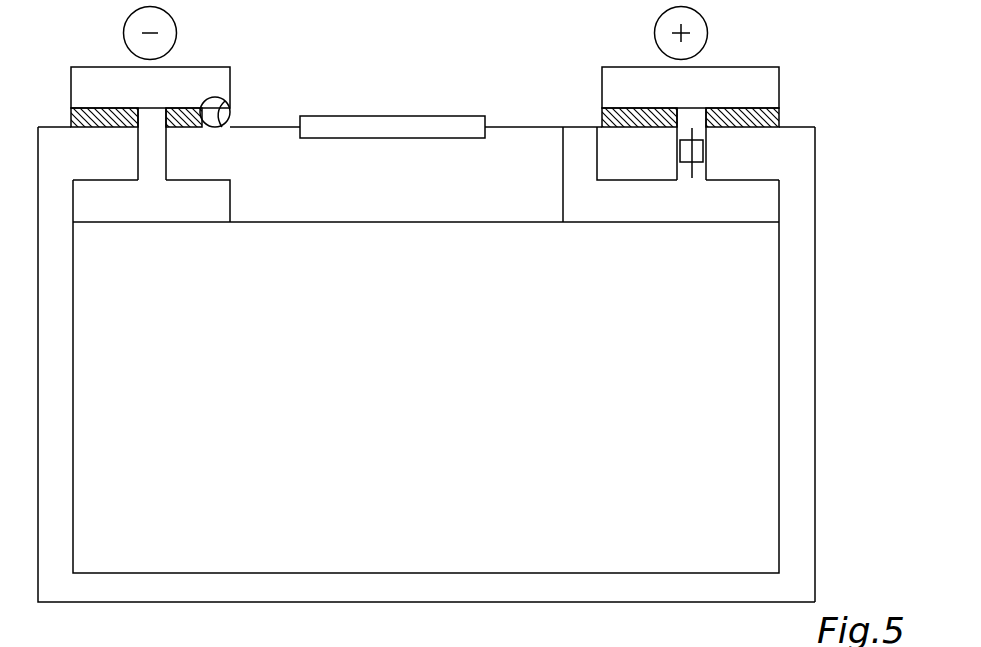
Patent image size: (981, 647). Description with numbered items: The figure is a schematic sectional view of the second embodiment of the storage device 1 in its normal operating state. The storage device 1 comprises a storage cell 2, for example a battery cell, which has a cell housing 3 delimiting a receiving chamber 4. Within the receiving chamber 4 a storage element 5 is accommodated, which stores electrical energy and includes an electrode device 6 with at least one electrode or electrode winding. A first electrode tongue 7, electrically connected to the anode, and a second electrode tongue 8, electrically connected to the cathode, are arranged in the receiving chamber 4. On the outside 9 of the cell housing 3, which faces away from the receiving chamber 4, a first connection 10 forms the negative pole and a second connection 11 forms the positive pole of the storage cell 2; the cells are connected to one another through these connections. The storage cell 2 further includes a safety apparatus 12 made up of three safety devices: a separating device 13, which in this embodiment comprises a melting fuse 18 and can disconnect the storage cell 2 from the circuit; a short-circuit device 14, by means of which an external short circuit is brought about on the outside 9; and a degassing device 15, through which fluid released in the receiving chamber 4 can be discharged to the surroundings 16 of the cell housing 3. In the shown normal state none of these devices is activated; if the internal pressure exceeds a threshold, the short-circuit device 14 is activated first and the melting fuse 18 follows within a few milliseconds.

The storage device 1 is at (809, 78).
The storage cell 2 is at (809, 123).
The cell housing 3 is at (815, 270).
The receiving chamber 4 is at (298, 196).
The storage element 5 is at (774, 437).
The electrode device 6 is at (774, 533).
The first electrode tongue 7 is at (150, 203).
The second electrode tongue 8 is at (732, 203).
The outside 9 is at (249, 123).
The first connection 10 is at (168, 92).
The second connection 11 is at (660, 90).
The safety apparatus 12 is at (780, 161).
The separating device 13 is at (686, 162).
The short-circuit device 14 is at (222, 127).
The degassing device 15 is at (352, 118).
The surroundings 16 is at (295, 36).
The melting fuse 18 is at (705, 153).